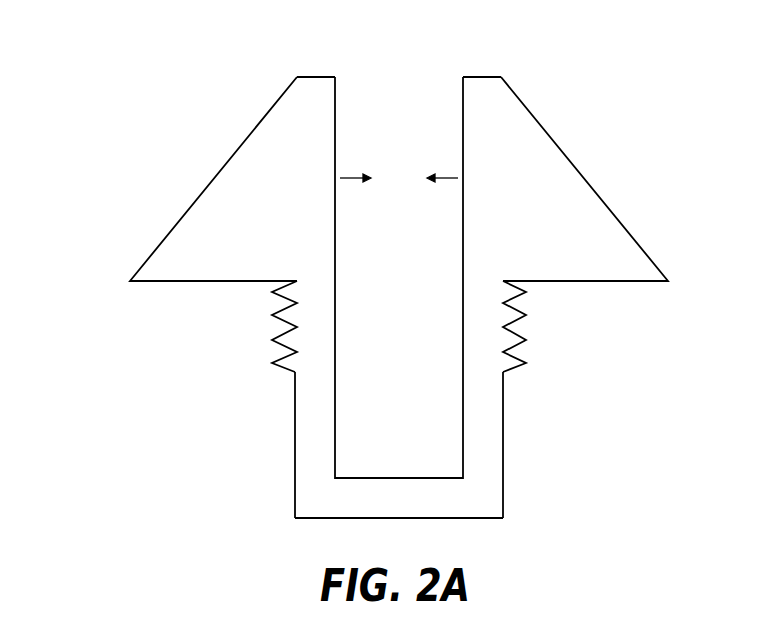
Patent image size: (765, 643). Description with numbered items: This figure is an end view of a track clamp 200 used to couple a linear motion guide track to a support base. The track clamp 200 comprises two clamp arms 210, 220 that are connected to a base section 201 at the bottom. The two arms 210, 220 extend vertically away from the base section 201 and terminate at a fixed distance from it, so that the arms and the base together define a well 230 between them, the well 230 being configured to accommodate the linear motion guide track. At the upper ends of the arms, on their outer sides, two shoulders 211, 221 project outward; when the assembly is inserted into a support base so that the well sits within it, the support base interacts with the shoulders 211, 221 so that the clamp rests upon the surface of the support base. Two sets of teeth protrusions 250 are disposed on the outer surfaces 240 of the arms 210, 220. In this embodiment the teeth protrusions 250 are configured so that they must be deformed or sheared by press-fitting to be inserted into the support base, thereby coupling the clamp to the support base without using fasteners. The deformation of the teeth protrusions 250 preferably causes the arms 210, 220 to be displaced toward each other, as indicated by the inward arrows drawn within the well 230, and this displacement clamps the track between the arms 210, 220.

The track clamp 200 is at (140, 51).
The base section 201 is at (414, 511).
The clamp arm 210 is at (313, 75).
The shoulder 211 is at (266, 254).
The clamp arm 220 is at (485, 75).
The shoulder 221 is at (579, 254).
The well 230 is at (414, 461).
The outer surfaces 240 is at (295, 462).
The teeth protrusions 250 is at (218, 285).